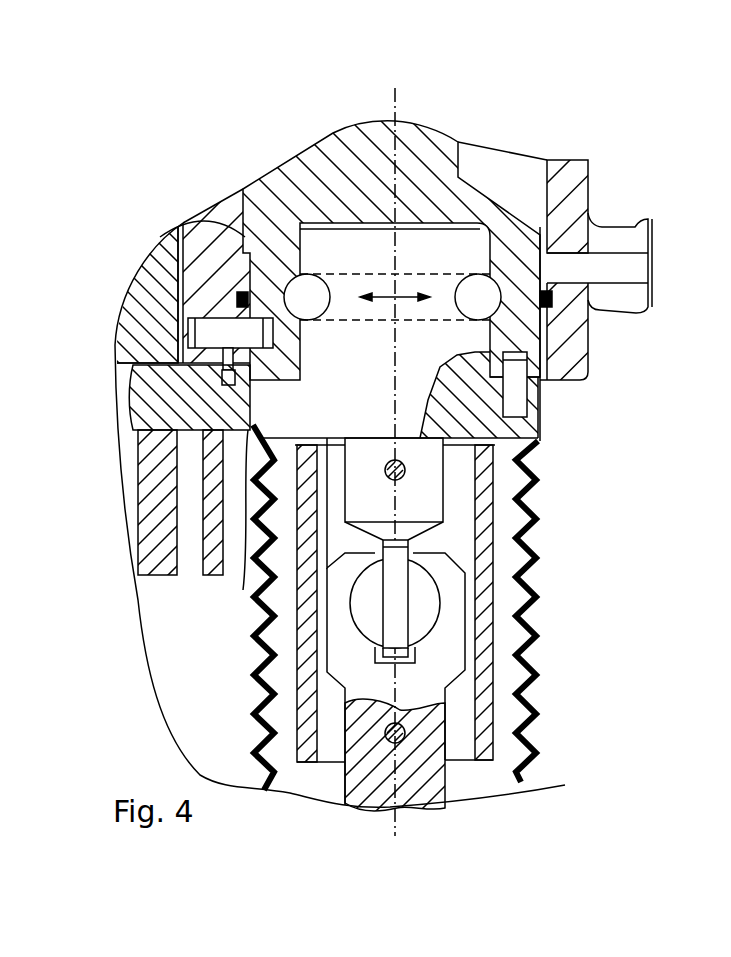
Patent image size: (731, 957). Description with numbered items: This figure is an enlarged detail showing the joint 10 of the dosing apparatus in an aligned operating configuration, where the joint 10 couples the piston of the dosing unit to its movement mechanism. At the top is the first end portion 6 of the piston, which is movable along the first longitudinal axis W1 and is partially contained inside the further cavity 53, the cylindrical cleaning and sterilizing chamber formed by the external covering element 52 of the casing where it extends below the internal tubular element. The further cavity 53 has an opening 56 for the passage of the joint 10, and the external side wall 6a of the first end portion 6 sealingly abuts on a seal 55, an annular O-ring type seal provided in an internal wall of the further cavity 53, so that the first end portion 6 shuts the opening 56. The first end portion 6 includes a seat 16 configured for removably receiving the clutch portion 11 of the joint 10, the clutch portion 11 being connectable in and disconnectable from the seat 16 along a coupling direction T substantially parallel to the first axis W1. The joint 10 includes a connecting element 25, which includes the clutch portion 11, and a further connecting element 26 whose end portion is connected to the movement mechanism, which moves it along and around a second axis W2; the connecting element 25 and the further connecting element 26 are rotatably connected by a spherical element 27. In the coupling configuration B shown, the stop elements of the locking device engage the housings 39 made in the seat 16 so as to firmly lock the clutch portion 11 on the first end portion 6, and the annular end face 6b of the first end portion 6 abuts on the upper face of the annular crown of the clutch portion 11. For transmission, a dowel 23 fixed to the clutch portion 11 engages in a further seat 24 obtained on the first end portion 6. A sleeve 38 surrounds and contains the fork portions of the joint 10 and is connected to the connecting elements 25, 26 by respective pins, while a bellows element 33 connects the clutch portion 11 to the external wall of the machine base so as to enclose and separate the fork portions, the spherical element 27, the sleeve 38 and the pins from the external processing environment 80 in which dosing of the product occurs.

The first end portion 6 is at (413, 197).
The external side wall 6a is at (200, 243).
The annular end face 6b is at (243, 590).
The external covering element 52 is at (230, 230).
The seal 55 is at (238, 302).
The opening 56 is at (520, 335).
The seat 16 is at (488, 280).
The housings 39 is at (500, 282).
The further seat 24 is at (530, 383).
The further cavity 53 is at (525, 445).
The clutch portion 11 is at (373, 388).
The dowel 23 is at (512, 402).
The connecting element 25 is at (413, 505).
The spherical element 27 is at (423, 612).
The sleeve 38 is at (483, 708).
The further connecting element 26 is at (417, 685).
The joint 10 is at (553, 767).
The bellows element 33 is at (267, 688).
The external processing environment 80 is at (200, 752).
The coupling configuration B is at (612, 155).
The first longitudinal axis W1 is at (395, 105).
The second axis W2 is at (395, 822).
The coupling direction T is at (702, 562).